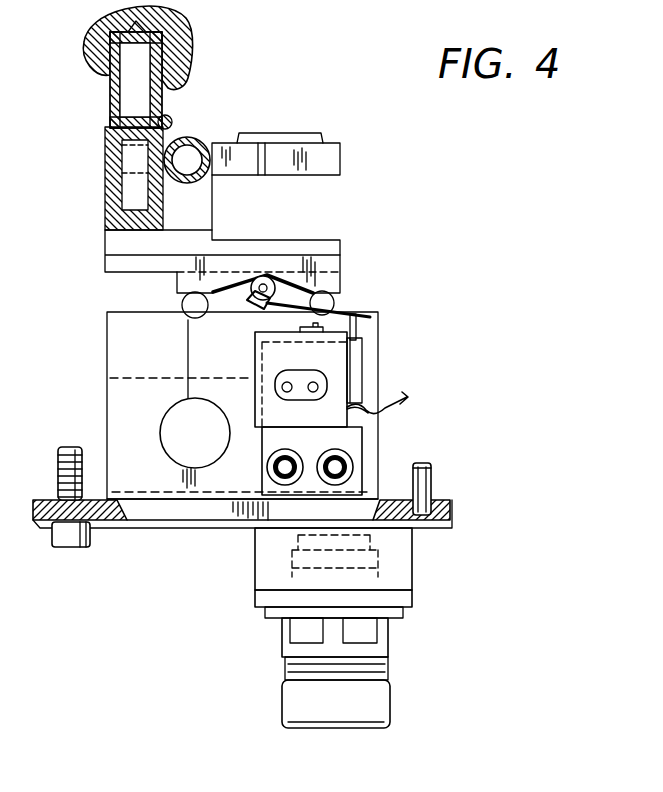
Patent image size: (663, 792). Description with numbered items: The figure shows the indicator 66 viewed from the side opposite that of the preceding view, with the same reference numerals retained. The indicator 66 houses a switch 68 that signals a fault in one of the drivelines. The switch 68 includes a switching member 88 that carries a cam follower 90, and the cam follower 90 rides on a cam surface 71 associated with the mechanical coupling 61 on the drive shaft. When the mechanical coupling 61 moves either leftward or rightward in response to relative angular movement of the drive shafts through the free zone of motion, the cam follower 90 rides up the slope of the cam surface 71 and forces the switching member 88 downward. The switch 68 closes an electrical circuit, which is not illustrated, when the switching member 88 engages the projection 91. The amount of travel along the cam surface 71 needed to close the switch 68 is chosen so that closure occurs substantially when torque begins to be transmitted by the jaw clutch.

The mechanical coupling 61 is at (190, 112).
The indicator 66 is at (416, 208).
The switch 68 is at (395, 423).
The cam surface 71 is at (178, 312).
The switching member 88 is at (351, 316).
The cam follower 90 is at (272, 280).
The projection 91 is at (322, 322).